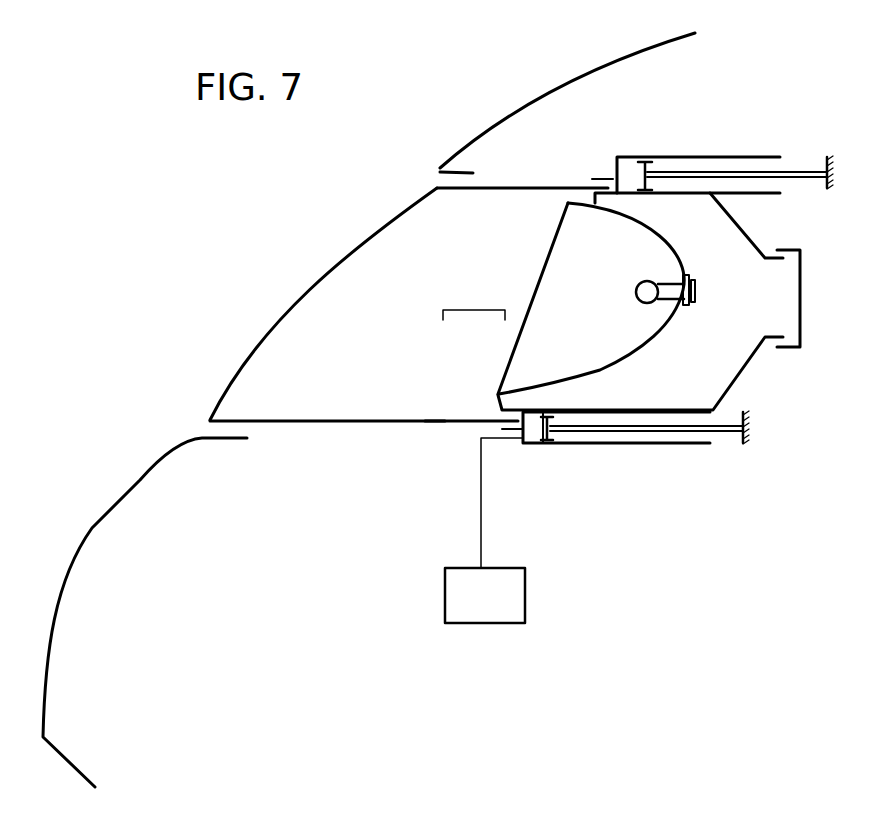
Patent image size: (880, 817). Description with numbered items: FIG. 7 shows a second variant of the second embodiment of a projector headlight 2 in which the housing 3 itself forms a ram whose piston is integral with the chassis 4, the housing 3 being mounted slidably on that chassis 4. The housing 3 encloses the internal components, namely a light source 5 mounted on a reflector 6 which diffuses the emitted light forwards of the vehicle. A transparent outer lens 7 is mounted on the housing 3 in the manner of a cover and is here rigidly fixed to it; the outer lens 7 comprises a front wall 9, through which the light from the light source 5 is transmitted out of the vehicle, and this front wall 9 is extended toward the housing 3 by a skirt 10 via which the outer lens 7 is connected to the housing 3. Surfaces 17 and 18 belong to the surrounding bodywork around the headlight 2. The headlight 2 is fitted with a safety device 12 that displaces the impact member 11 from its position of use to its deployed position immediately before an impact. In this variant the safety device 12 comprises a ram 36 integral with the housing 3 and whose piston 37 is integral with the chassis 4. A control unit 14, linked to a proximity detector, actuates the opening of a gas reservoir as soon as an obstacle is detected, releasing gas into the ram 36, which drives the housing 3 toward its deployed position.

The headlight 2 is at (369, 505).
The housing 3 is at (588, 305).
The chassis 4 is at (825, 165).
The light source 5 is at (645, 281).
The reflector 6 is at (610, 362).
The outer lens 7 is at (433, 418).
The front wall 9 is at (300, 292).
The skirt 10 is at (508, 186).
The impact member 11 is at (472, 308).
The safety device 12 is at (692, 294).
The control unit 14 is at (485, 530).
The lower fairing 17 is at (138, 480).
The upper fairing 18 is at (553, 92).
The ram 36 is at (733, 157).
The piston 37 is at (678, 174).